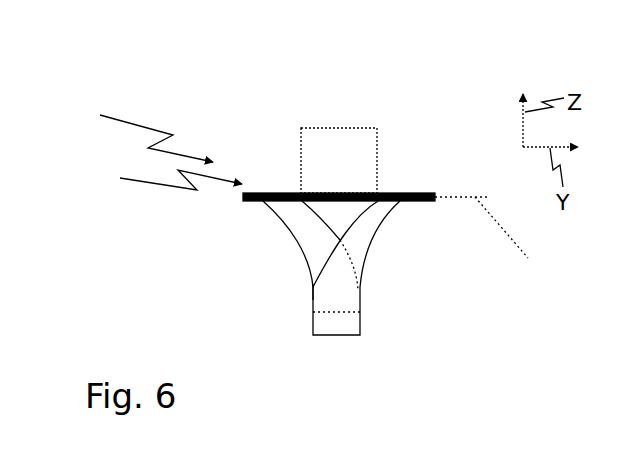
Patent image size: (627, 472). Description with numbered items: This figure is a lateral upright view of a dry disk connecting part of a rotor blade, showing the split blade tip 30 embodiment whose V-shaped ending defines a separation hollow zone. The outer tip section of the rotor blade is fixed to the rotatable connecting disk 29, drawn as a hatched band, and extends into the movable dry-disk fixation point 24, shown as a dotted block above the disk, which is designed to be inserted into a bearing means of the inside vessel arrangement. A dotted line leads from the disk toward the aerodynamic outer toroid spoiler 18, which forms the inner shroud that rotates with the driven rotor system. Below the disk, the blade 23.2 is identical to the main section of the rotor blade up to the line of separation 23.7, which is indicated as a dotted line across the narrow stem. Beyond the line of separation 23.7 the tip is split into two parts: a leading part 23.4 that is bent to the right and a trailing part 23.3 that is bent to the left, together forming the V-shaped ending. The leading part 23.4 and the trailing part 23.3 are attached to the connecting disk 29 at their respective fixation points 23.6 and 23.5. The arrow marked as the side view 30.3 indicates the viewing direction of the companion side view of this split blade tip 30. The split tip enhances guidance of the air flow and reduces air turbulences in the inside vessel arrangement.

The aerodynamic outer toroid spoiler 18 is at (488, 237).
The blade 23.2 is at (333, 327).
The trailing part 23.3 is at (311, 284).
The leading part 23.4 is at (367, 258).
The fixation point 23.5 is at (264, 201).
The fixation point 23.6 is at (408, 202).
The line of separation 23.7 is at (342, 313).
The movable dry-disk fixation point 24 is at (378, 152).
The rotatable connecting disk 29 is at (242, 197).
The split blade tip 30 is at (164, 180).
The side view 30.3 is at (130, 131).